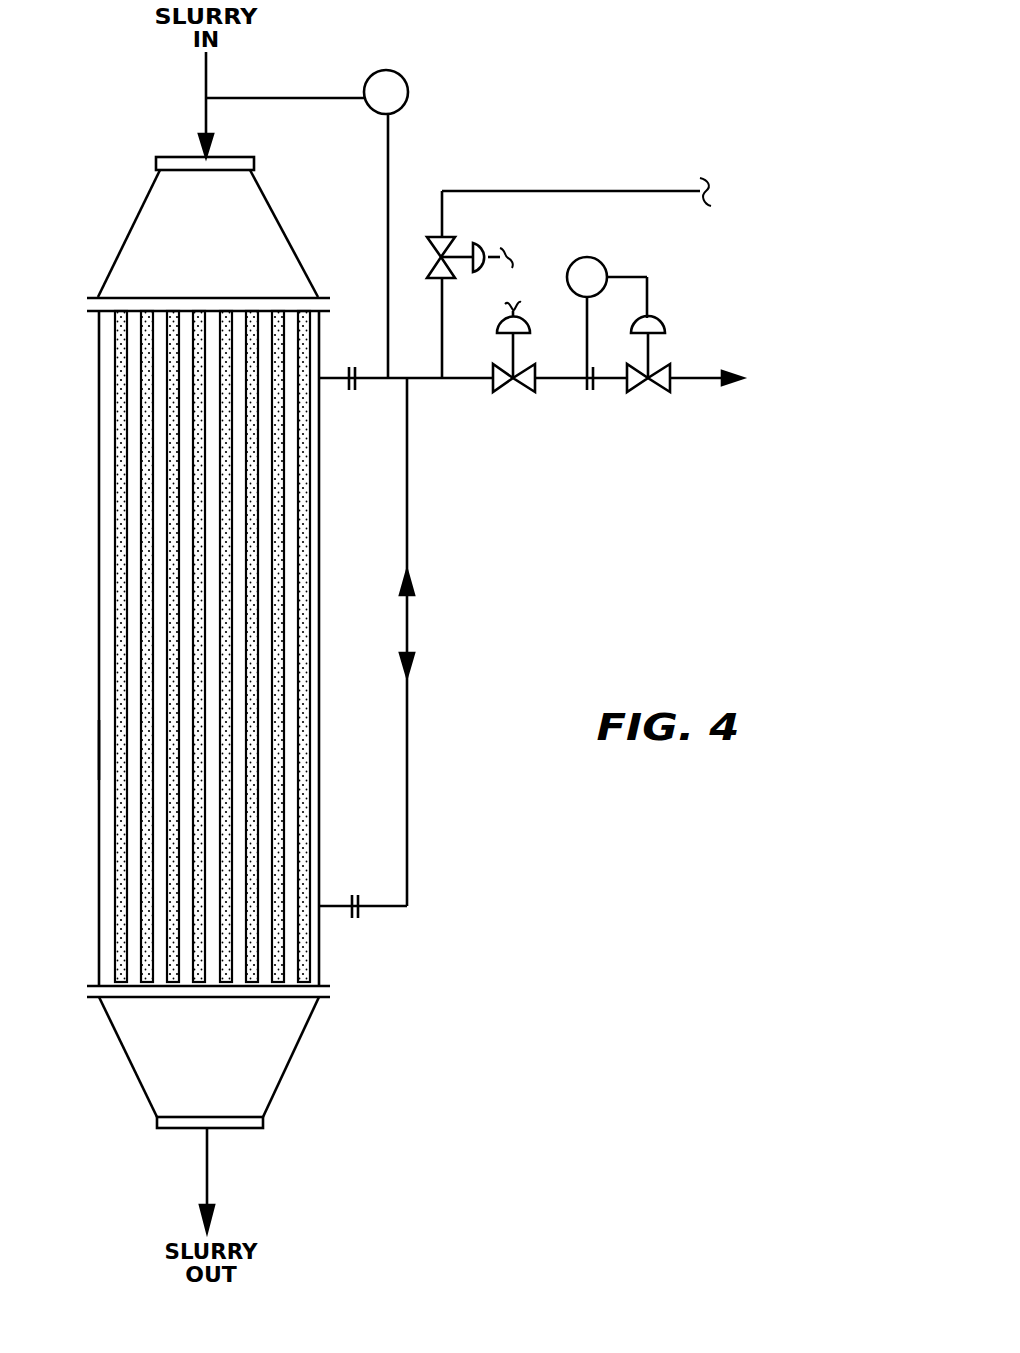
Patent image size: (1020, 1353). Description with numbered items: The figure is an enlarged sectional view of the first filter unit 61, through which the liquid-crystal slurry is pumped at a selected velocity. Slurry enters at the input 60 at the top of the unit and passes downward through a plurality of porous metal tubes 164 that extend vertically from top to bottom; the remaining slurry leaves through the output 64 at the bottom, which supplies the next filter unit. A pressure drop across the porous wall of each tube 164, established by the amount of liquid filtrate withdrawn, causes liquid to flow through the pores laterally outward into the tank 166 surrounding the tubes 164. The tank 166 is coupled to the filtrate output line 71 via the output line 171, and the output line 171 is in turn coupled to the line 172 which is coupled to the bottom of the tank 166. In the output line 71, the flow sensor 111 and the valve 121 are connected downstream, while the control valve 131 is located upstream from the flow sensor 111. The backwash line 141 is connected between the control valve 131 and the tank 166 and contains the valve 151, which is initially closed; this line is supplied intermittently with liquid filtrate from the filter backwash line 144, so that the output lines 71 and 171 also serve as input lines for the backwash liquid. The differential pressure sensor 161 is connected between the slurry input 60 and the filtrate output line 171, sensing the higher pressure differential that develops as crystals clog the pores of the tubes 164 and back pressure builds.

The input 60 is at (204, 152).
The first filter unit 61 is at (92, 444).
The output 64 is at (210, 1129).
The output line 71 is at (688, 377).
The flow sensor 111 is at (597, 262).
The valve 121 is at (665, 389).
The control valve 131 is at (521, 389).
The backwash input line 141 is at (442, 334).
The filter backwash line 144 is at (676, 191).
The control valve 151 is at (494, 248).
The differential pressure sensor 161 is at (408, 93).
The porous metal tubes 164 is at (150, 810).
The tank 166 is at (98, 740).
The output line 171 is at (398, 380).
The line 172 is at (410, 868).